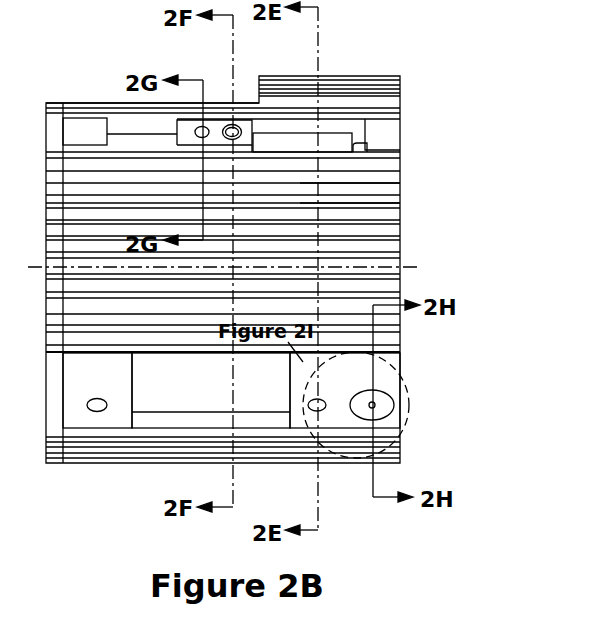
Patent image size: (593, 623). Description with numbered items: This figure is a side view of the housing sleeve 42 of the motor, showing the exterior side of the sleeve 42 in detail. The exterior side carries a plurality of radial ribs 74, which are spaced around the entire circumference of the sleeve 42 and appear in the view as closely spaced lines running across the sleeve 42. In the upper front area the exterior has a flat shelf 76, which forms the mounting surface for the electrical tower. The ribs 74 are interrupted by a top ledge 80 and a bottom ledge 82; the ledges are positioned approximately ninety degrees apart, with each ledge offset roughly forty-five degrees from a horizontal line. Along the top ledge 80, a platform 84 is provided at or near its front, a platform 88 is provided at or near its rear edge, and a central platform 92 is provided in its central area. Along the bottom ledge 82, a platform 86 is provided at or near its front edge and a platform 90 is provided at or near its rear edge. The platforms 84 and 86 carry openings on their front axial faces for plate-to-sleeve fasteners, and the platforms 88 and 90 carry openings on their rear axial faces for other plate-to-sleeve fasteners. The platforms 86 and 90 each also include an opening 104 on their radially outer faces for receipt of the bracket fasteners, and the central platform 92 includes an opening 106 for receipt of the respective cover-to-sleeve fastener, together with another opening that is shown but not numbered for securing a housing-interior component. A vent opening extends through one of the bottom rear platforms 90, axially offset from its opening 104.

The housing sleeve 42 is at (387, 67).
The radial ribs 74 is at (378, 184).
The flat shelf 76 is at (75, 103).
The top ledge 80 is at (133, 145).
The bottom ledge 82 is at (253, 390).
The platform 84 is at (82, 130).
The platform 86 is at (73, 414).
The platform 88 is at (383, 137).
The platform 90 is at (378, 382).
The central platform 92 is at (216, 127).
The opening 104 is at (97, 413).
The opening 106 is at (242, 128).